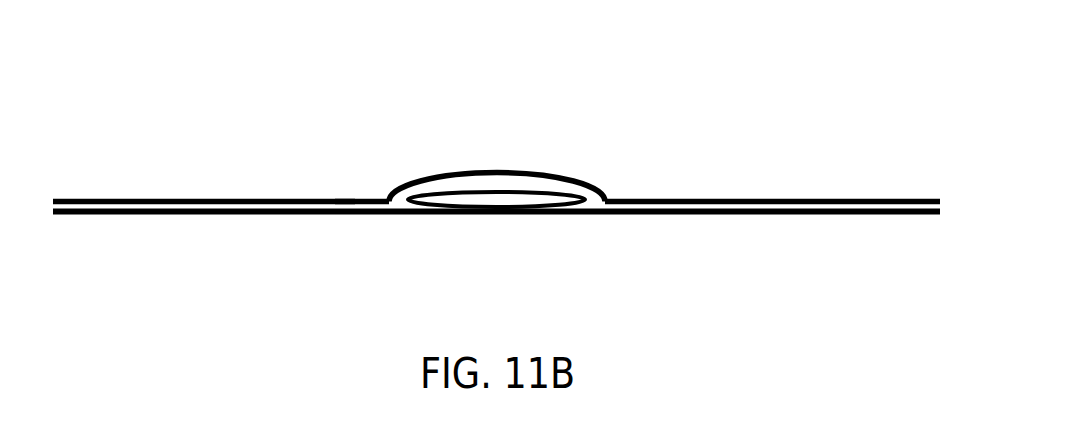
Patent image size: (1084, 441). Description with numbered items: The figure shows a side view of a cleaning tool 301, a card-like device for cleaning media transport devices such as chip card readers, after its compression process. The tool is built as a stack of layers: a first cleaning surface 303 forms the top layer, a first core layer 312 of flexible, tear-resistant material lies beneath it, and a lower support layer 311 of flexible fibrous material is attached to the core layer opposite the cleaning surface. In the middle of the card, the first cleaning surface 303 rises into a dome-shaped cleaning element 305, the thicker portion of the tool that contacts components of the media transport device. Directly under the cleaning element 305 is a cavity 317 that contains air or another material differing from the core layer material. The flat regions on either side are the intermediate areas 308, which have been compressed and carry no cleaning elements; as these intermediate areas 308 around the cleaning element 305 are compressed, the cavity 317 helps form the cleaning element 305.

The cleaning tool 301 is at (205, 58).
The first cleaning surface 303 is at (685, 198).
The cleaning element 305 is at (498, 170).
The intermediate portion 308 is at (248, 176).
The support layer 311 is at (133, 215).
The first core layer 312 is at (345, 202).
The cavity 317 is at (506, 201).